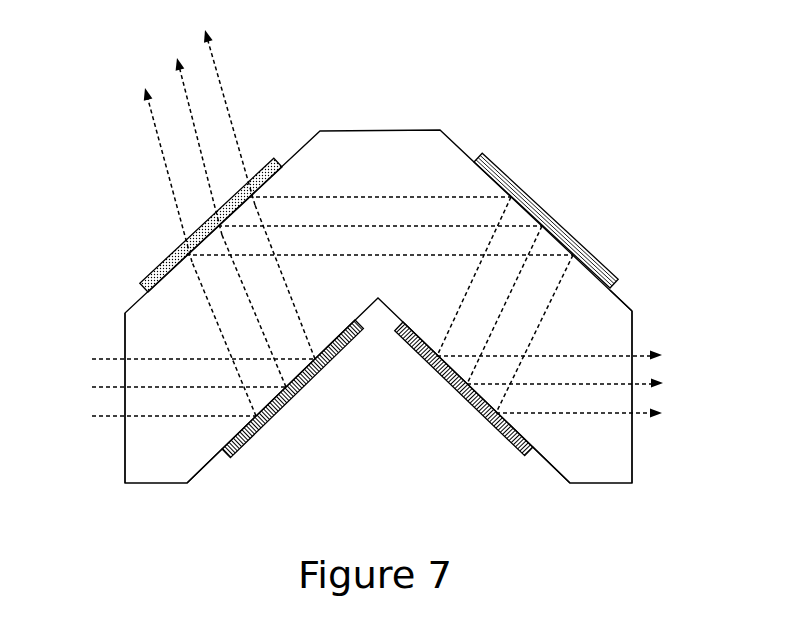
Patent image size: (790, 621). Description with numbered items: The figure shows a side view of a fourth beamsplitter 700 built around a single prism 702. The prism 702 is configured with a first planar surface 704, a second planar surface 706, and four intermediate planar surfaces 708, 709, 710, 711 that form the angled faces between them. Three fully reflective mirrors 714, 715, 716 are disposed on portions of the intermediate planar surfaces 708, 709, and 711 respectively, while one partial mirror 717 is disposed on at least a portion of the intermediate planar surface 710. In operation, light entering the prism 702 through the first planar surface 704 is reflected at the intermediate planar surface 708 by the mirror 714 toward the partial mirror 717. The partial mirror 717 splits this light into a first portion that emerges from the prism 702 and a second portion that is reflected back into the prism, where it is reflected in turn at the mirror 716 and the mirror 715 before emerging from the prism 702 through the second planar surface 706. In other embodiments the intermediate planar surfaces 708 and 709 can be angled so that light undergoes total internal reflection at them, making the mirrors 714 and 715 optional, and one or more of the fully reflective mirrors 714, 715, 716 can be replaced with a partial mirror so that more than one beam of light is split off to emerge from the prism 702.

The fourth beamsplitter 700 is at (618, 167).
The prism 702 is at (442, 128).
The first planar surface 704 is at (125, 465).
The second planar surface 706 is at (633, 453).
The intermediate planar surface 708 is at (200, 470).
The intermediate planar surface 709 is at (562, 470).
The intermediate planar surface 710 is at (128, 308).
The intermediate planar surface 711 is at (627, 303).
The fully reflective mirror 714 is at (272, 422).
The fully reflective mirror 715 is at (462, 395).
The fully reflective mirror 716 is at (608, 267).
The partial mirror 717 is at (153, 262).